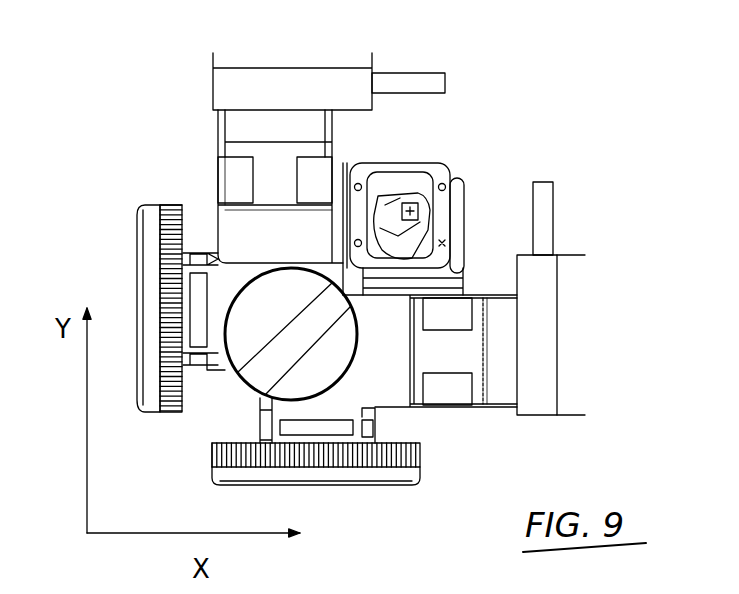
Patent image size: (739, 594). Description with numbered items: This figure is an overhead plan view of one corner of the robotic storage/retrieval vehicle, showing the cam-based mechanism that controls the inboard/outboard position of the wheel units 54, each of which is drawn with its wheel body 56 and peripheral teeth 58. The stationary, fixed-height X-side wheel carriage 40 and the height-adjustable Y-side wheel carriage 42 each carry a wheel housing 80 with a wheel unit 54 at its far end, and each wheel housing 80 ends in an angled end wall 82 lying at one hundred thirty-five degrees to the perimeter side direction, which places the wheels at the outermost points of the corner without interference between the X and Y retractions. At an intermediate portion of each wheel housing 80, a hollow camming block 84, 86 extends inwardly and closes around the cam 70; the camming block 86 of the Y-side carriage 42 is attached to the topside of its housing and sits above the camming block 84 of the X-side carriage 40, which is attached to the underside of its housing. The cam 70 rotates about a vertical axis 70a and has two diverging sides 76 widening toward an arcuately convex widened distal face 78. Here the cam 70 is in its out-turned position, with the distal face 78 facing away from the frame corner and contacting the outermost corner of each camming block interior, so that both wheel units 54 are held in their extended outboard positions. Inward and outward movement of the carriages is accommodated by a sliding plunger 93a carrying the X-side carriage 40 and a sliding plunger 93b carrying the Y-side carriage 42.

The X-side wheel carriage 40 is at (540, 400).
The Y-side wheel carriage 42 is at (232, 92).
The wheel unit 54 is at (274, 356).
The gear body 56 is at (152, 403).
The gear teeth 58 is at (212, 457).
The cam 70 is at (425, 205).
The vertical axis 70a is at (402, 213).
The diverging sides 76 is at (386, 198).
The widened distal face 78 is at (393, 198).
The wheel housing 80 is at (226, 282).
The angled end wall 82 is at (283, 350).
The camming block 84 is at (458, 193).
The camming block 86 is at (362, 166).
The plunger 93a is at (545, 232).
The plunger 93b is at (406, 84).